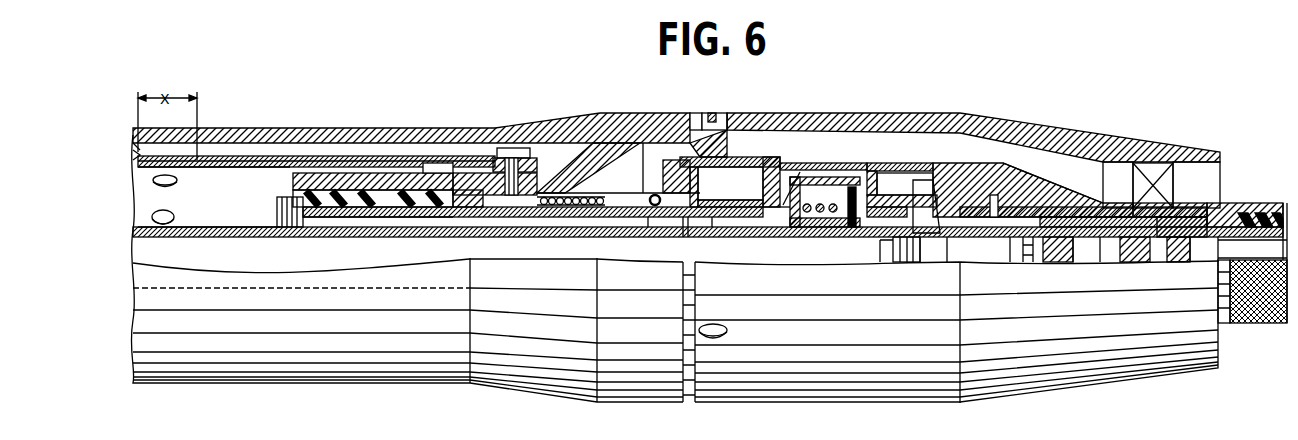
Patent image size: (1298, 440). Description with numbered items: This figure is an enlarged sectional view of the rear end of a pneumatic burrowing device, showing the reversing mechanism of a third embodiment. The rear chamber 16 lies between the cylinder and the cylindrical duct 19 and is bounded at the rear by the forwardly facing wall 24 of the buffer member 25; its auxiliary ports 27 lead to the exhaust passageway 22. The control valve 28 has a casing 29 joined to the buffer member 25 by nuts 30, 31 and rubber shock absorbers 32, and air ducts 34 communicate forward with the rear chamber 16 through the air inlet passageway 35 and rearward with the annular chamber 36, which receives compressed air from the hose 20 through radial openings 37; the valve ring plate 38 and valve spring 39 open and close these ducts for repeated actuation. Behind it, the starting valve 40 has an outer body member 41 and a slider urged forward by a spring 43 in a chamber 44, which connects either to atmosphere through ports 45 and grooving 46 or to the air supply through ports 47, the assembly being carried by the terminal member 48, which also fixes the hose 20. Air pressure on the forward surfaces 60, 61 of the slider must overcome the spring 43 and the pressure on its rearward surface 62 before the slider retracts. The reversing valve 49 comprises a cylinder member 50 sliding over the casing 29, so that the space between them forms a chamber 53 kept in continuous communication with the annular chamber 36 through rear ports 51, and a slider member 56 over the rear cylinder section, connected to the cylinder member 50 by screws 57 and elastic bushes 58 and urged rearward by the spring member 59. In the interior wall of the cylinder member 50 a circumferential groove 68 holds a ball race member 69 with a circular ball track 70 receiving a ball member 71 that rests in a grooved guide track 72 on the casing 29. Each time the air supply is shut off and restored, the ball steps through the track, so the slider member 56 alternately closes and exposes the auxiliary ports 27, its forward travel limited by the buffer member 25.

The rear chamber 16 is at (222, 222).
The cylindrical duct 19 is at (165, 232).
The hose 20 is at (1258, 205).
The exhaust passageway 22 is at (290, 142).
The forwardly facing wall 24 is at (300, 180).
The buffer member 25 is at (298, 230).
The auxiliary ports 27 is at (172, 181).
The control valve 28 is at (765, 215).
The casing 29 is at (583, 217).
The nut 30 is at (445, 215).
The nut 31 is at (292, 197).
The rubber shock absorbers 32 is at (365, 210).
The air ducts 34 is at (808, 185).
The air inlet passageway 35 is at (325, 228).
The annular chamber 36 is at (917, 197).
The radial openings 37 is at (925, 195).
The valve ring plate 38 is at (885, 235).
The valve spring 39 is at (820, 225).
The starting valve 40 is at (1050, 248).
The outer body member 41 is at (1005, 205).
The spring 43 is at (1090, 205).
The chamber 44 is at (1105, 240).
The ports 45 is at (995, 195).
The grooving 46 is at (1005, 225).
The ports 47 is at (1140, 240).
The terminal member 48 is at (1183, 240).
The reversing valve 49 is at (634, 188).
The cylinder member 50 is at (765, 143).
The rear ports 51 is at (782, 180).
The chamber 53 is at (743, 197).
The slider member 56 is at (138, 162).
The screw 57 is at (513, 150).
The elastic bushes 58 is at (555, 207).
The spring member 59 is at (488, 215).
The forward surface 60 is at (930, 240).
The forward surface 61 is at (1025, 245).
The rearward surface 62 is at (1063, 240).
The circumferential groove 68 is at (655, 195).
The ball race member 69 is at (697, 167).
The circular ball track 70 is at (650, 220).
The ball member 71 is at (685, 228).
The grooved guide track 72 is at (712, 220).